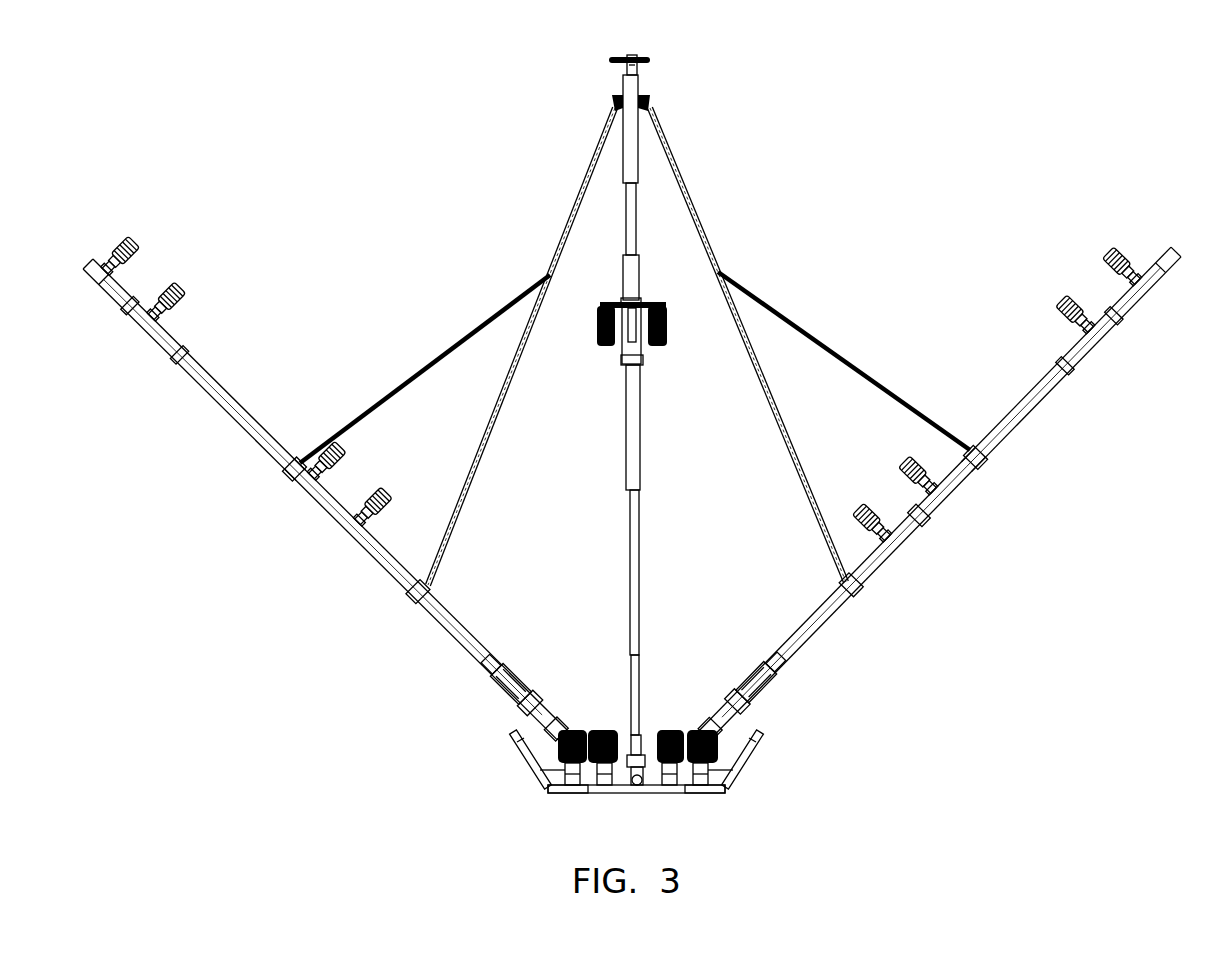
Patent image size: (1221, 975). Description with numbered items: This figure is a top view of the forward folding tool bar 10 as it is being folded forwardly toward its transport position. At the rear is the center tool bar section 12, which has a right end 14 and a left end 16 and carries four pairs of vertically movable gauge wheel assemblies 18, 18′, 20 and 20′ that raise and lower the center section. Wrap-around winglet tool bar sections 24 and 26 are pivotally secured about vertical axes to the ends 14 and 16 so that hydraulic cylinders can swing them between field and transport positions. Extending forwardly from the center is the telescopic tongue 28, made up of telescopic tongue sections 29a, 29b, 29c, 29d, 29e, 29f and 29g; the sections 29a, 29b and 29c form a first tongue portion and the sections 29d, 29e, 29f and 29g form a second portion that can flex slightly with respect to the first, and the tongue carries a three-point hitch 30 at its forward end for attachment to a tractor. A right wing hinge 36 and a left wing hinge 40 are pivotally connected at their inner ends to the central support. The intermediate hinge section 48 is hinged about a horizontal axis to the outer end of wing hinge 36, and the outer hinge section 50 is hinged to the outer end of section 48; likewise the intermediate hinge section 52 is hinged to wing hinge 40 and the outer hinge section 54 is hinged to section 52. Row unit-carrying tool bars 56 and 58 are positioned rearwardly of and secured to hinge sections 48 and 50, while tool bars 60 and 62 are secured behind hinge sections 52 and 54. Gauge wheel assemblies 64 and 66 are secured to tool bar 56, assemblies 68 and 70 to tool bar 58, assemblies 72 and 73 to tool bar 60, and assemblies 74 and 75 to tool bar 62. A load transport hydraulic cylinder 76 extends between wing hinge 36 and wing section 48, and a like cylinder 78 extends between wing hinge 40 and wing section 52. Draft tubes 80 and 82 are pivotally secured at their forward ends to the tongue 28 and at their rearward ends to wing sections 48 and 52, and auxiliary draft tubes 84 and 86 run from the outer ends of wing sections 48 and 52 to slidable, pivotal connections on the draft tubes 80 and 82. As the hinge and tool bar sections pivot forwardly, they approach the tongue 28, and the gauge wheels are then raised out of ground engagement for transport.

The forward folding tool bar 10 is at (322, 707).
The center tool bar section 12 is at (641, 803).
The right end 14 is at (715, 793).
The left end 16 is at (560, 793).
The gauge wheel assembly 18 is at (712, 738).
The gauge wheel assembly 18′ is at (672, 735).
The gauge wheel assembly 20 is at (565, 735).
The gauge wheel assembly 20′ is at (603, 735).
The wrap-around winglet tool bar section 24 is at (752, 755).
The wrap-around winglet tool bar section 26 is at (520, 755).
The telescopic tongue 28 is at (600, 457).
The telescopic tongue section 29a is at (634, 158).
The telescopic tongue section 29b is at (637, 205).
The telescopic tongue section 29c is at (641, 265).
The telescopic tongue section 29d is at (639, 418).
The telescopic tongue section 29e is at (643, 545).
The telescopic tongue section 29f is at (643, 618).
The telescopic tongue section 29g is at (647, 680).
The three-point hitch 30 is at (645, 58).
The right wing hinge 36 is at (748, 698).
The left wing hinge 40 is at (522, 692).
The intermediate hinge section 48 is at (907, 502).
The outer hinge section 50 is at (1058, 352).
The intermediate hinge section 52 is at (458, 616).
The outer hinge section 54 is at (200, 368).
The intermediate row unit-carrying tool bar 56 is at (835, 615).
The outer row unit-carrying tool bar 58 is at (1040, 403).
The intermediate row unit-carrying tool bar 60 is at (445, 630).
The outer row unit-carrying tool bar 62 is at (204, 390).
The gauge wheel assembly 64 is at (872, 506).
The gauge wheel assembly 66 is at (918, 460).
The gauge wheel assembly 68 is at (1060, 300).
The gauge wheel assembly 70 is at (1108, 252).
The gauge wheel assembly 72 is at (392, 490).
The gauge wheel assembly 73 is at (348, 448).
The gauge wheel assembly 74 is at (183, 290).
The gauge wheel assembly 75 is at (135, 243).
The load transport hydraulic cylinder 76 is at (755, 680).
The load transport hydraulic cylinder 78 is at (492, 668).
The draft tube 80 is at (698, 225).
The draft tube 82 is at (578, 205).
The auxiliary draft tube 84 is at (860, 372).
The auxiliary draft tube 86 is at (442, 356).